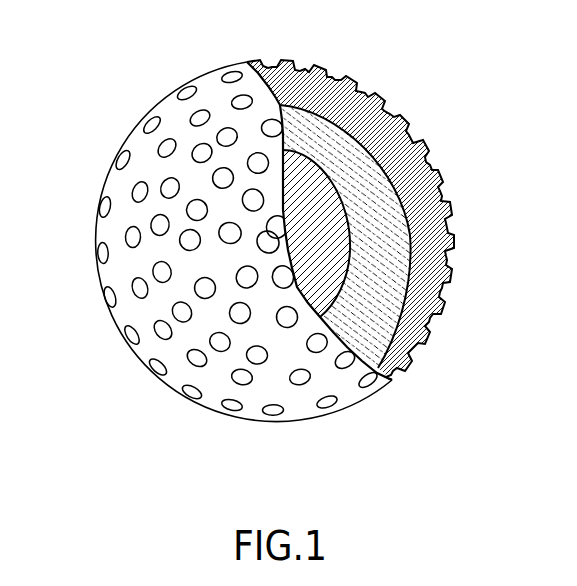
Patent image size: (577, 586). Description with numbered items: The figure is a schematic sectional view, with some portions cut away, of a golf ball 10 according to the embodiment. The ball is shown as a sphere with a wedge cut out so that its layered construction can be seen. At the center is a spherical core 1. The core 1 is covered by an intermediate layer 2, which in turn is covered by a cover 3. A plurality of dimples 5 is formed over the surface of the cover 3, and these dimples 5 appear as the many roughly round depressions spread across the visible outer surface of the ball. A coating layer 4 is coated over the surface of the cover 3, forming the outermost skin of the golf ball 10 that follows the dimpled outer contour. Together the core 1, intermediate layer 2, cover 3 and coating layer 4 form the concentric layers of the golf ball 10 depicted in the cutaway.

The golf ball 10 is at (470, 92).
The spherical core 1 is at (333, 234).
The intermediate layer 2 is at (360, 292).
The cover 3 is at (436, 161).
The coating layer 4 is at (447, 204).
The dimples 5 is at (158, 147).